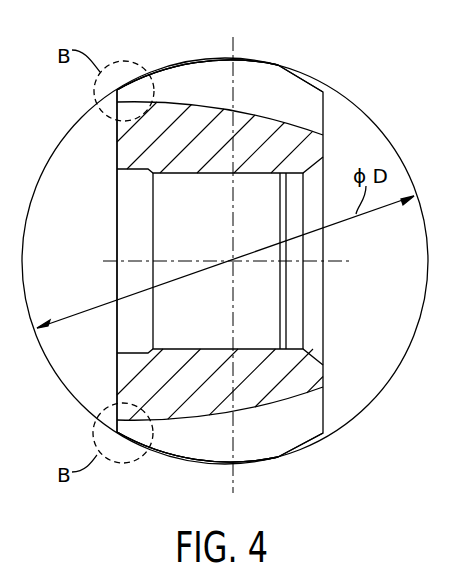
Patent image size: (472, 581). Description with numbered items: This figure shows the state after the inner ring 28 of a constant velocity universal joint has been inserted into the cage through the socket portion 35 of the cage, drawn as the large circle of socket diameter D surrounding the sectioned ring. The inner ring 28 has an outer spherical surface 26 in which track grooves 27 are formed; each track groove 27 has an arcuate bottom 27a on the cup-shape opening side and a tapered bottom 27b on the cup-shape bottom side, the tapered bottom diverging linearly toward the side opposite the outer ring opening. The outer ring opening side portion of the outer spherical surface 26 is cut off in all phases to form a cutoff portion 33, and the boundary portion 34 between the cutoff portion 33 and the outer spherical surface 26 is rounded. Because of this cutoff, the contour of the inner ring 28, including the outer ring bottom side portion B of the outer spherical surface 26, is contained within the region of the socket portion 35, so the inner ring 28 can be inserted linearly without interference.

The outer spherical surface 26 is at (168, 458).
The track grooves 27 is at (261, 266).
The arcuate bottoms 27a is at (290, 122).
The tapered bottoms 27b is at (165, 102).
The inner ring 28 is at (118, 397).
The cutoff portion 33 is at (312, 85).
The boundary portion 34 is at (279, 64).
The socket portion 35 is at (421, 316).